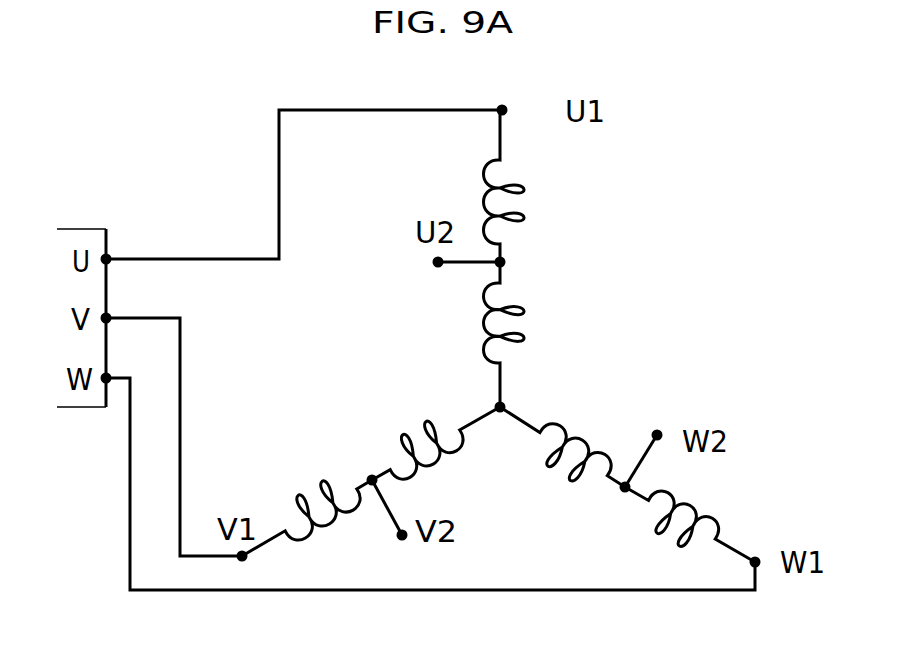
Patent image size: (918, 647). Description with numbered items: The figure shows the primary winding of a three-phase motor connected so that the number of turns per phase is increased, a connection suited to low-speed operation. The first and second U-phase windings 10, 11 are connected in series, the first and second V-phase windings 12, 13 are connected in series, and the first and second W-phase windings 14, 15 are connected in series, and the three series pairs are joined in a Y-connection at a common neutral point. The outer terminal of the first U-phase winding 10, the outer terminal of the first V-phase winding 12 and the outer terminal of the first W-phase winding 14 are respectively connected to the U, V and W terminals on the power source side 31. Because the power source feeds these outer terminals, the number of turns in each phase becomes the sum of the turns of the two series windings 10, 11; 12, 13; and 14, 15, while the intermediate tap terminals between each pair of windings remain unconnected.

The first U-phase winding 10 is at (532, 186).
The second U-phase winding 11 is at (531, 334).
The first V-phase winding 12 is at (307, 505).
The second V-phase winding 13 is at (436, 437).
The first W-phase winding 14 is at (690, 533).
The second W-phase winding 15 is at (562, 461).
The power source side 31 is at (67, 409).